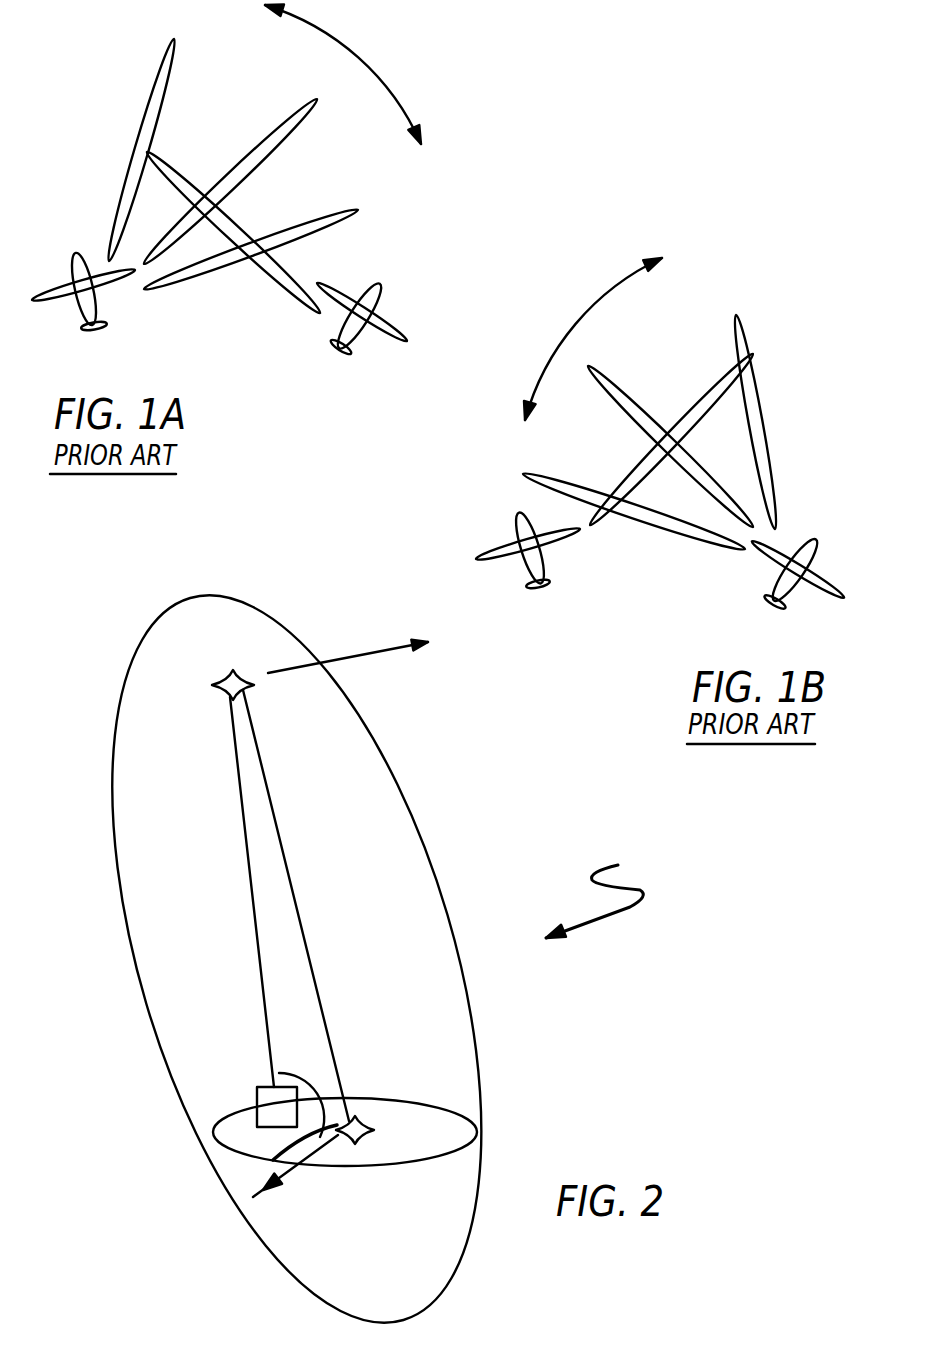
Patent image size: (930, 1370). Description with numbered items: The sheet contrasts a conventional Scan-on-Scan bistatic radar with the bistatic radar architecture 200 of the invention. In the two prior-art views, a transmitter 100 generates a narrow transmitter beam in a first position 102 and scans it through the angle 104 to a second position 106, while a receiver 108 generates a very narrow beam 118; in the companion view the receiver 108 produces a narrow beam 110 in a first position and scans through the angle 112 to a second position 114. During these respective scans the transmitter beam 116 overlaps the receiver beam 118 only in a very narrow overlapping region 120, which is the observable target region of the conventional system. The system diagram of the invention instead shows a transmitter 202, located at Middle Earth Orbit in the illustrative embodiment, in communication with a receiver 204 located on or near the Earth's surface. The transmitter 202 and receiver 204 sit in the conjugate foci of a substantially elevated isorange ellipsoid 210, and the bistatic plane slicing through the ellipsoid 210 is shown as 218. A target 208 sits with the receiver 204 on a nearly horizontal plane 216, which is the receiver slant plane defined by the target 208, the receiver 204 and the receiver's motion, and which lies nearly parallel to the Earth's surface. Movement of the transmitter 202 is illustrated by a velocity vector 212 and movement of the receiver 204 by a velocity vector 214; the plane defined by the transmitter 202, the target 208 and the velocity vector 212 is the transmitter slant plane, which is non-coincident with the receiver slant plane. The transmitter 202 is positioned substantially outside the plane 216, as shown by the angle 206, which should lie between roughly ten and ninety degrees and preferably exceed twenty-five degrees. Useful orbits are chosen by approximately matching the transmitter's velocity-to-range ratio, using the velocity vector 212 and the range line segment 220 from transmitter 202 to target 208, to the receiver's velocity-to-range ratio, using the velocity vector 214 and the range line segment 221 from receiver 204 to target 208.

In FIG. 1A, the transmitter 100 is at (94, 322).
In FIG. 1B, the transmitter 100 is at (537, 582).
In FIG. 1A, the first position of transmitter beam 102 is at (165, 76).
In FIG. 1A, the transmitter scan angle 104 is at (372, 73).
In FIG. 1A, the second position of transmitter beam 106 is at (330, 210).
In FIG. 1A, the receiver 108 is at (347, 351).
In FIG. 1B, the receiver 108 is at (778, 603).
In FIG. 1B, the receiver beam in first position 110 is at (732, 547).
In FIG. 1B, the receiver scan angle 112 is at (562, 342).
In FIG. 1B, the second position of receiver beam 114 is at (732, 321).
In FIG. 1A, the transmitter beam 116 is at (279, 124).
In FIG. 1B, the transmitter beam 116 is at (755, 358).
In FIG. 1A, the receiver beam 118 is at (294, 299).
In FIG. 1A, the overlapping region 120 is at (206, 195).
In FIG. 1B, the overlapping region 120 is at (673, 437).
In FIG. 2, the bistatic radar architecture 200 is at (602, 895).
In FIG. 2, the transmitter 202 is at (232, 678).
In FIG. 2, the receiver 204 is at (367, 1122).
In FIG. 2, the angle 206 is at (312, 1085).
In FIG. 2, the target 208 is at (265, 1087).
In FIG. 2, the isorange ellipsoid 210 is at (177, 593).
In FIG. 2, the transmitter velocity vector 212 is at (340, 655).
In FIG. 2, the receiver velocity vector 214 is at (317, 1153).
In FIG. 2, the nearly horizontal plane 216 is at (443, 1107).
In FIG. 2, the bistatic plane 218 is at (287, 965).
In FIG. 2, the transmitter range line segment 220 is at (256, 912).
In FIG. 2, the receiver range line segment 221 is at (337, 1128).